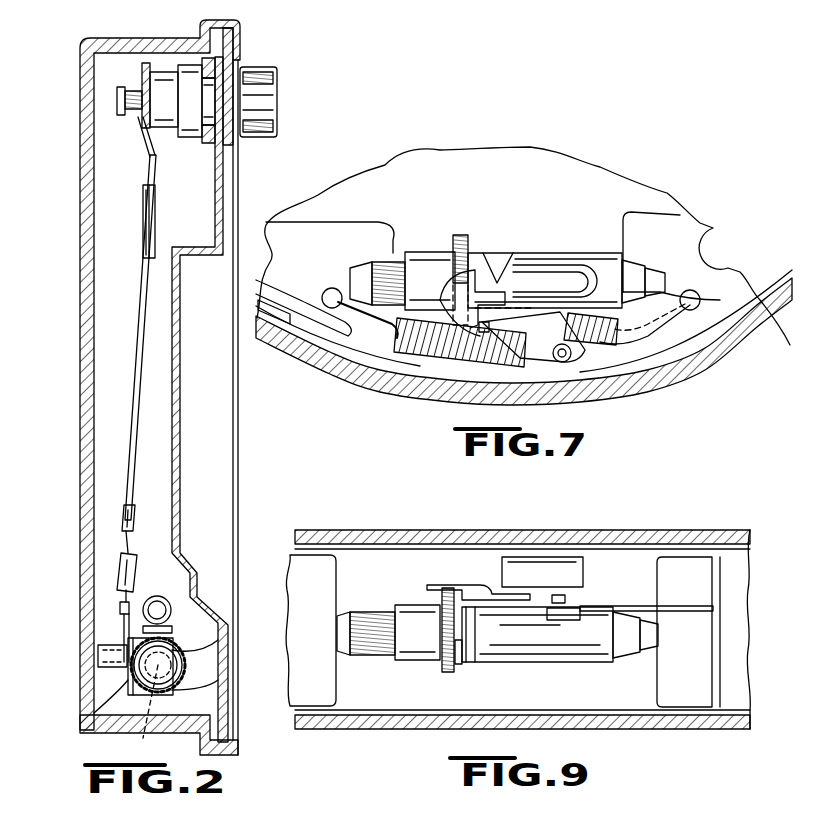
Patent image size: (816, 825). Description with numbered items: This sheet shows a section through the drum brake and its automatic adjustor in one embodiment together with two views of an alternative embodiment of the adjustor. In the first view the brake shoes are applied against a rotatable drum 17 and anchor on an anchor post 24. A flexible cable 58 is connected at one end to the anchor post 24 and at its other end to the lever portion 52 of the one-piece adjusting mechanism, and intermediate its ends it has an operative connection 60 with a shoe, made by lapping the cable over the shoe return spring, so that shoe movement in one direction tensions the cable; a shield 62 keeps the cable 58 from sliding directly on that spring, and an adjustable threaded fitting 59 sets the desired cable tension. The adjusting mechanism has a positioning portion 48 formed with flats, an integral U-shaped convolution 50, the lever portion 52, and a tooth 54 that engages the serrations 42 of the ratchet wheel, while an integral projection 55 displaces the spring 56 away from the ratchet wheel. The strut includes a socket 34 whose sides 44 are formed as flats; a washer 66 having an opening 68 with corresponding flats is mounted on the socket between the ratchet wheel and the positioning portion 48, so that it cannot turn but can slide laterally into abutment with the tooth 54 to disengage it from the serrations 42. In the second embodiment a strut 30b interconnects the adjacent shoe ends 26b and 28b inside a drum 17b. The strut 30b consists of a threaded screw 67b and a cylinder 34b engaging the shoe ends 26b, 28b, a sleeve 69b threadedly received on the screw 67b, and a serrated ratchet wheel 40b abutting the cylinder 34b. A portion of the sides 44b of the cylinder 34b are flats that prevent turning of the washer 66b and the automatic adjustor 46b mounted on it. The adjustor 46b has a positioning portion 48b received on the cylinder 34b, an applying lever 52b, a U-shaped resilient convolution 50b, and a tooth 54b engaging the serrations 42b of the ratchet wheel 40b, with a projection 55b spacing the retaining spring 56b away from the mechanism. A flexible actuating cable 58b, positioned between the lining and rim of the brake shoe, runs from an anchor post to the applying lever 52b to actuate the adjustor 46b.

In FIG. 2, the rotatable drum 17 is at (88, 160).
In FIG. 2, the anchor post 24 is at (116, 101).
In FIG. 2, the flexible cable 58 is at (146, 303).
In FIG. 2, the operative connection 60 is at (157, 236).
In FIG. 2, the shield 62 is at (143, 215).
In FIG. 2, the adjustable threaded fitting 59 is at (122, 517).
In FIG. 2, the lever portion 52 is at (118, 620).
In FIG. 2, the spring 56 is at (156, 597).
In FIG. 2, the integral projection 55 is at (200, 606).
In FIG. 2, the washer 66 is at (174, 632).
In FIG. 2, the positioning portion 48 is at (135, 682).
In FIG. 2, the socket 34 is at (186, 668).
In FIG. 2, the opening 68 is at (190, 673).
In FIG. 2, the serrations 42 is at (200, 697).
In FIG. 2, the U-shaped convolution 50 is at (118, 660).
In FIG. 2, the tooth 54 is at (122, 672).
In FIG. 2, the sides 44 is at (135, 713).
In FIG. 7, the shoe end 26b is at (328, 222).
In FIG. 9, the shoe end 26b is at (316, 690).
In FIG. 7, the shoe end 28b is at (662, 235).
In FIG. 9, the shoe end 28b is at (693, 695).
In FIG. 7, the flexible actuating cable 58b is at (650, 335).
In FIG. 9, the flexible actuating cable 58b is at (672, 608).
In FIG. 7, the threaded screw 67b is at (380, 263).
In FIG. 9, the threaded screw 67b is at (363, 612).
In FIG. 7, the sleeve 69b is at (413, 262).
In FIG. 9, the sleeve 69b is at (405, 612).
In FIG. 7, the serrated ratchet wheel 40b is at (442, 248).
In FIG. 9, the serrated ratchet wheel 40b is at (440, 640).
In FIG. 7, the washer 66b is at (470, 245).
In FIG. 9, the washer 66b is at (452, 672).
In FIG. 7, the automatic adjustor 46b is at (498, 268).
In FIG. 9, the automatic adjustor 46b is at (492, 600).
In FIG. 7, the cylinder 34b is at (537, 258).
In FIG. 9, the cylinder 34b is at (630, 660).
In FIG. 7, the positioning portion 48b is at (500, 258).
In FIG. 9, the positioning portion 48b is at (470, 655).
In FIG. 7, the U-shaped resilient convolution 50b is at (600, 268).
In FIG. 9, the U-shaped resilient convolution 50b is at (585, 565).
In FIG. 7, the strut 30b is at (572, 254).
In FIG. 9, the strut 30b is at (575, 655).
In FIG. 7, the tooth 54b is at (415, 352).
In FIG. 9, the tooth 54b is at (436, 585).
In FIG. 7, the projection 55b is at (470, 358).
In FIG. 7, the retaining spring 56b is at (515, 350).
In FIG. 7, the applying lever 52b is at (548, 362).
In FIG. 9, the applying lever 52b is at (575, 604).
In FIG. 9, the drum 17b is at (572, 537).
In FIG. 9, the sides 44b is at (512, 648).
In FIG. 9, the serrations 42b is at (452, 662).